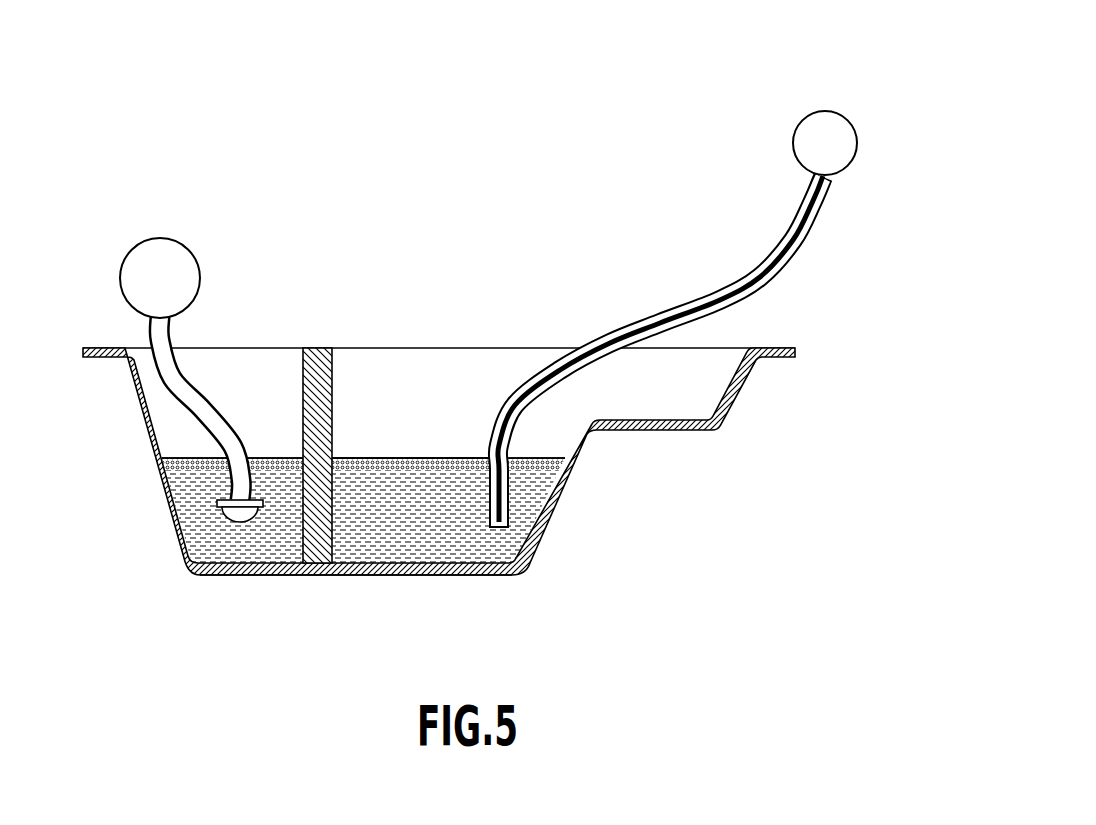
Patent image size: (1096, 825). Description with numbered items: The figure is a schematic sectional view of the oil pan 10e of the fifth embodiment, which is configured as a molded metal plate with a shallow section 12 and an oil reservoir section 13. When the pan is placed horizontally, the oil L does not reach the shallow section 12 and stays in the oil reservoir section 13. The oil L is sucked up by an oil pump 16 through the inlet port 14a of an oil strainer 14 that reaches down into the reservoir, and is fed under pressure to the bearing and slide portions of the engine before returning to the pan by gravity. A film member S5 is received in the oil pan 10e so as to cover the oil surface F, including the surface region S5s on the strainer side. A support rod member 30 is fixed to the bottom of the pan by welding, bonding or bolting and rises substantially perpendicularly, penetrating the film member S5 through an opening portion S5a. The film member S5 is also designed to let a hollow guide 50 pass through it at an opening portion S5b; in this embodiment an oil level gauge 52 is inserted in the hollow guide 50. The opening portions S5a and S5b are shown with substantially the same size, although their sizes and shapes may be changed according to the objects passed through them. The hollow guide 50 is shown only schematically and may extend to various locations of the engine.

The oil pan 10e is at (440, 168).
The shallow section 12 is at (663, 432).
The oil reservoir section 13 is at (377, 577).
The oil strainer 14 is at (168, 382).
The inlet port 14a is at (238, 522).
The oil pump 16 is at (158, 238).
The support rod member 30 is at (318, 348).
The hollow guide 50 is at (710, 290).
The oil level gauge 52 is at (826, 112).
The oil surface F is at (557, 490).
The oil L is at (447, 543).
The film member S5 is at (541, 458).
The opening portion S5a is at (335, 460).
The opening portion S5b is at (487, 460).
The oil surface portion on suction side S5s is at (280, 433).